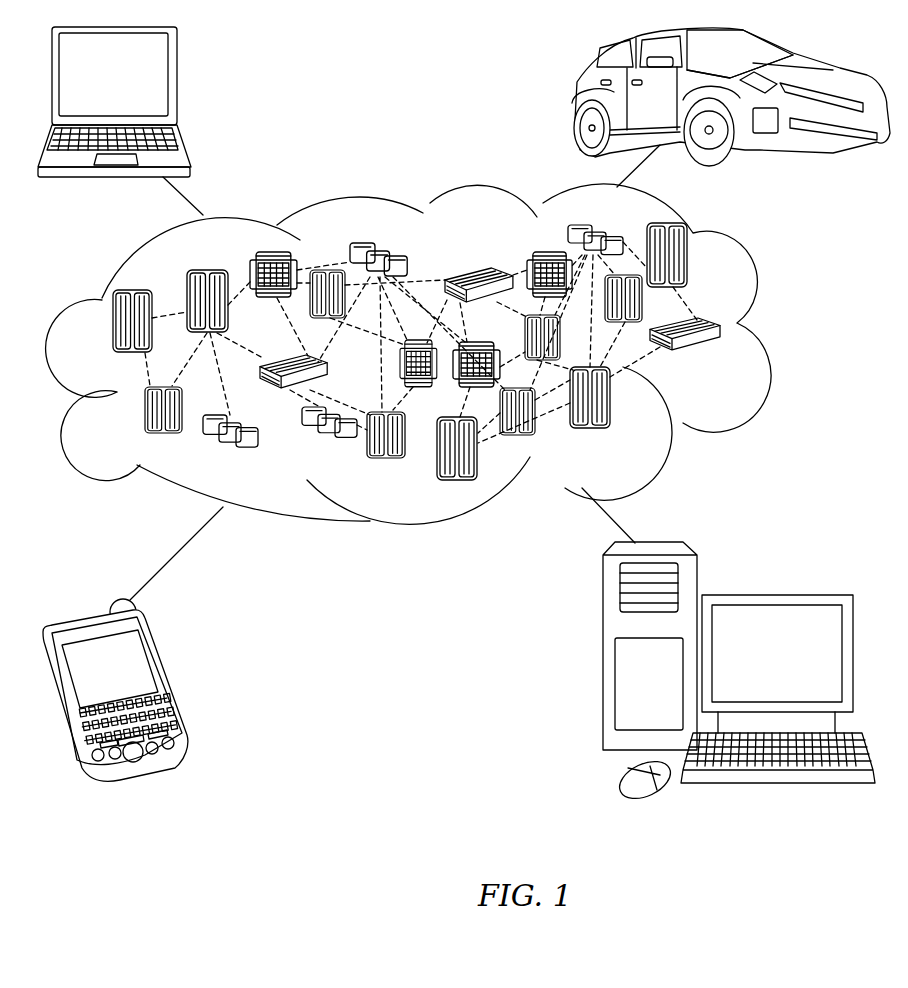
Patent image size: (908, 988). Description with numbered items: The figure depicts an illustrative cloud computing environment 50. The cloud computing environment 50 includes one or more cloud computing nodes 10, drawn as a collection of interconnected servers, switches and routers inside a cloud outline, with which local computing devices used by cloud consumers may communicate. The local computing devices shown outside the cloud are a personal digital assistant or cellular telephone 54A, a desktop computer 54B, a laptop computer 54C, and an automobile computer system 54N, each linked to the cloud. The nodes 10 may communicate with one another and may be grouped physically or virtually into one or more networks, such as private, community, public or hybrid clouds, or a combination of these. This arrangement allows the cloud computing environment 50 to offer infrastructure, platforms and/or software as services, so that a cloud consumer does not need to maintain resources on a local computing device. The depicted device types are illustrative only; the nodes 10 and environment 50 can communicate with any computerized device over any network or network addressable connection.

The cloud computing node 10 is at (719, 359).
The cloud computing environment 50 is at (762, 331).
The personal digital assistant or cellular telephone 54A is at (167, 678).
The desktop computer 54B is at (775, 593).
The laptop computer 54C is at (178, 82).
The automobile computer system 54N is at (573, 96).